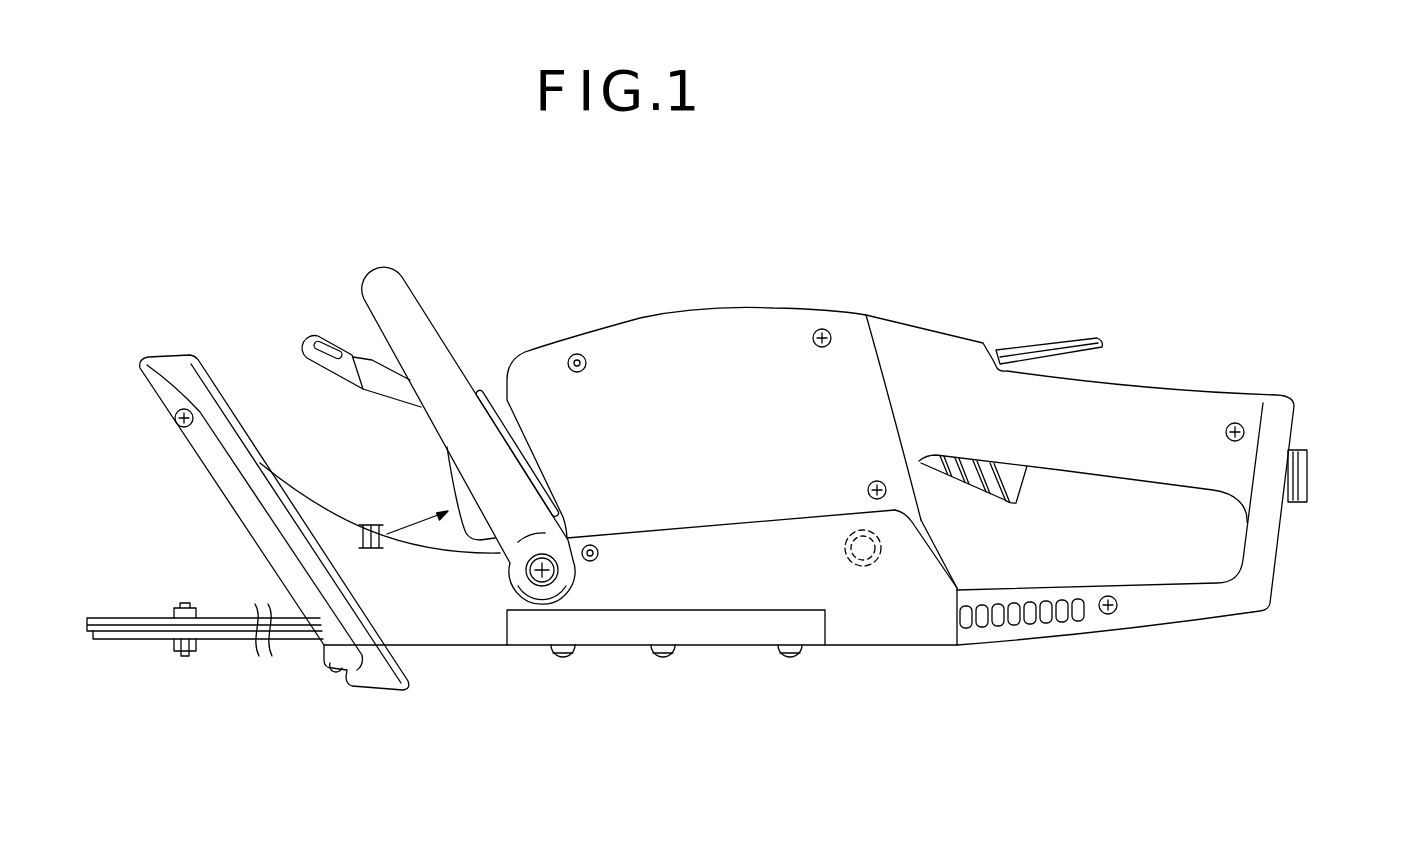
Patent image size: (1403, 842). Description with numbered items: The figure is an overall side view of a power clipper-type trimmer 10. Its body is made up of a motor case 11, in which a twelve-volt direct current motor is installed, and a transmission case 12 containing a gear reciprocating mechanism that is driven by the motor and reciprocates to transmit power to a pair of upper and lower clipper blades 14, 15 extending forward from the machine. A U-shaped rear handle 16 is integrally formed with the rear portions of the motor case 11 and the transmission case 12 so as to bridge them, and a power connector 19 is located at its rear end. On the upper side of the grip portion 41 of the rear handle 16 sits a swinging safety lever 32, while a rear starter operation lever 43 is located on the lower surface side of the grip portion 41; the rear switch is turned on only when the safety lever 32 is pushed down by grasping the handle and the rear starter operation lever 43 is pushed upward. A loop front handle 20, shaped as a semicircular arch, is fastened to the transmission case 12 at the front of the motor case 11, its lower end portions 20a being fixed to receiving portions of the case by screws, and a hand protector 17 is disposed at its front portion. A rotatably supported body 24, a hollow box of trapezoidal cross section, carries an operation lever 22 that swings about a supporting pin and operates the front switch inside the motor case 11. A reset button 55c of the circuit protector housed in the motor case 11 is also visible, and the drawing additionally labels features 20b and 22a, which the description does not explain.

The clipper-type trimmer 10 is at (1125, 203).
The motor case 11 is at (741, 330).
The transmission case 12 is at (884, 618).
The upper clipper blade 14 is at (103, 617).
The lower clipper blade 15 is at (107, 635).
The rear handle 16 is at (1216, 392).
The hand protector 17 is at (210, 453).
The power connector 19 is at (1310, 460).
The loop front handle 20 is at (398, 297).
The lower end portions 20a is at (562, 570).
The lever boss 20b is at (535, 582).
The operation lever 22 is at (400, 388).
The rod knob 22a is at (324, 340).
The rotatably supported body 24 is at (492, 388).
The safety lever 32 is at (1123, 378).
The grip portion 41 is at (1143, 400).
The rear starter operation lever 43 is at (1057, 480).
The reset button 55c is at (883, 557).